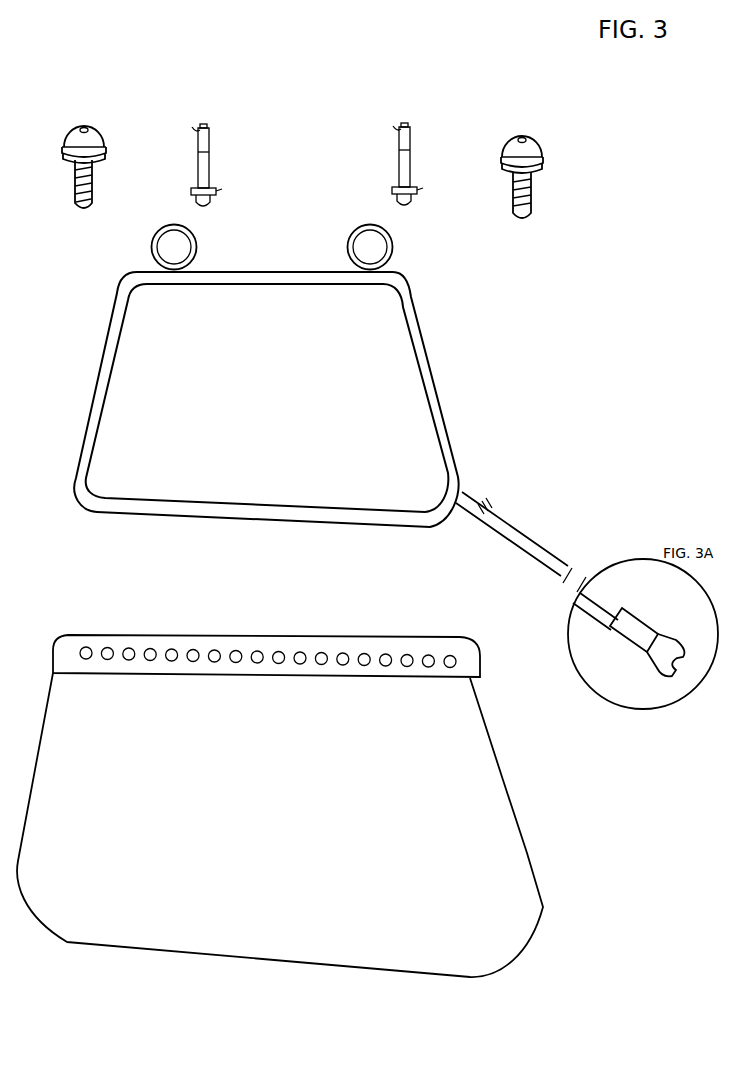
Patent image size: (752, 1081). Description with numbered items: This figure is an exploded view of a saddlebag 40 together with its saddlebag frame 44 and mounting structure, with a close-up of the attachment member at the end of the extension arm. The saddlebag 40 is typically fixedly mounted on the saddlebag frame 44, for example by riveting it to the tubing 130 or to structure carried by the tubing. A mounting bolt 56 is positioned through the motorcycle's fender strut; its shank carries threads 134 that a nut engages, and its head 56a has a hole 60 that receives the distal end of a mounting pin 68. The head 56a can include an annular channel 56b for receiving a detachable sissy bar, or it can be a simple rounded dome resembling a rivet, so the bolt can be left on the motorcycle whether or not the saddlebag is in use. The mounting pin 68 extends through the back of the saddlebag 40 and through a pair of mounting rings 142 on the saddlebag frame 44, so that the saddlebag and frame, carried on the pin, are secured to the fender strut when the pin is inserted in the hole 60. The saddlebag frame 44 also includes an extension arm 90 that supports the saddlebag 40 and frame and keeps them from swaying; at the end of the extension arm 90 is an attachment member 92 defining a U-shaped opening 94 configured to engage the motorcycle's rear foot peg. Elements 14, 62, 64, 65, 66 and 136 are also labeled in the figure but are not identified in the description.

In FIG. 3, the pin 14 is at (209, 130).
In FIG. 3, the saddlebag 40 is at (268, 819).
In FIG. 3, the saddlebag frame 44 is at (429, 366).
In FIG. 3, the mounting bolt 56 is at (96, 131).
In FIG. 3, the head 56a is at (105, 141).
In FIG. 3, the annular channel 56b is at (545, 161).
In FIG. 3, the hole 60 is at (85, 126).
In FIG. 3, the pin tip 62 is at (309, 199).
In FIG. 3, the pin top detail 64 is at (293, 124).
In FIG. 3, the pin cap 65 is at (209, 139).
In FIG. 3, the pin flange edge 66 is at (323, 187).
In FIG. 3, the mounting pin 68 is at (196, 200).
In FIG. 3, the extension arm 90 is at (519, 538).
In FIG. 3A, the extension arm 90 is at (600, 603).
In FIG. 3A, the attachment member 92 is at (641, 628).
In FIG. 3A, the U-shaped opening 94 is at (672, 677).
In FIG. 3, the tubing 130 is at (437, 406).
In FIG. 3, the threads 134 is at (75, 195).
In FIG. 3, the screw 136 is at (64, 144).
In FIG. 3, the mounting rings 142 is at (150, 243).